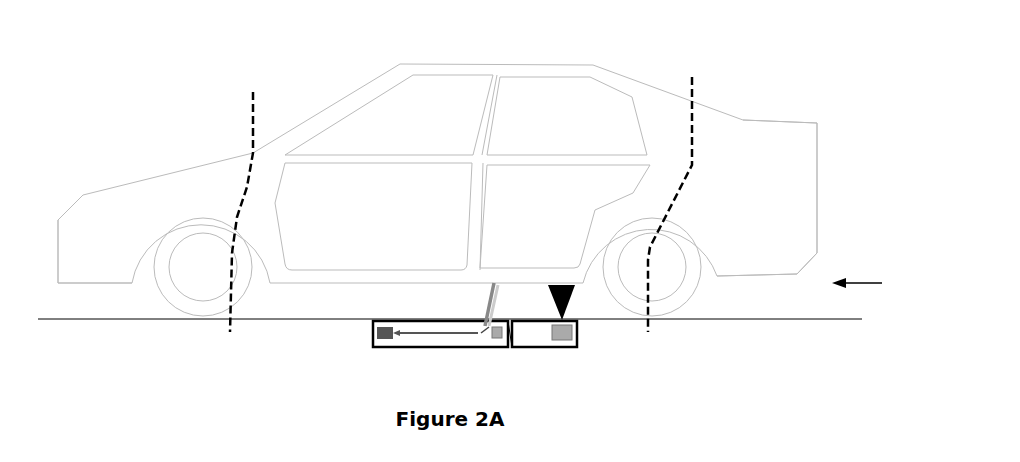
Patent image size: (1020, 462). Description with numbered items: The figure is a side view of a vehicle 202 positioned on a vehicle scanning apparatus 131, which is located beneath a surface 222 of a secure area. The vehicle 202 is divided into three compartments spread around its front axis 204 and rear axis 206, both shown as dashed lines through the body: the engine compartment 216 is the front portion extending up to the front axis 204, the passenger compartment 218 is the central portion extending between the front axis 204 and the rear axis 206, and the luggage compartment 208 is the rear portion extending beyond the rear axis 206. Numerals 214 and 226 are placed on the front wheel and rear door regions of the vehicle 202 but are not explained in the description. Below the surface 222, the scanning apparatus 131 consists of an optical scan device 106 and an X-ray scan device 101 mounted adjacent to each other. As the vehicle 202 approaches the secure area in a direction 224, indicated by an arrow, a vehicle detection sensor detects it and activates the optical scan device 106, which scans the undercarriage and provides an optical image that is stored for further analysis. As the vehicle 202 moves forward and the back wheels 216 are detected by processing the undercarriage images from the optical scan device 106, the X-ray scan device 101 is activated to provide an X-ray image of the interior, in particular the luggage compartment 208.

The X-ray scan device 101 is at (560, 348).
The optical scan device 106 is at (398, 347).
The vehicle scanning apparatus 131 is at (515, 373).
The vehicle 202 is at (495, 78).
The front axis 204 is at (252, 115).
The rear axis 206 is at (693, 87).
The luggage compartment 208 is at (769, 211).
The front wheel 214 is at (195, 308).
The engine compartment 216 is at (111, 247).
The passenger compartment 218 is at (408, 231).
The surface 222 is at (102, 320).
The direction 224 is at (873, 283).
The rear door 226 is at (508, 210).